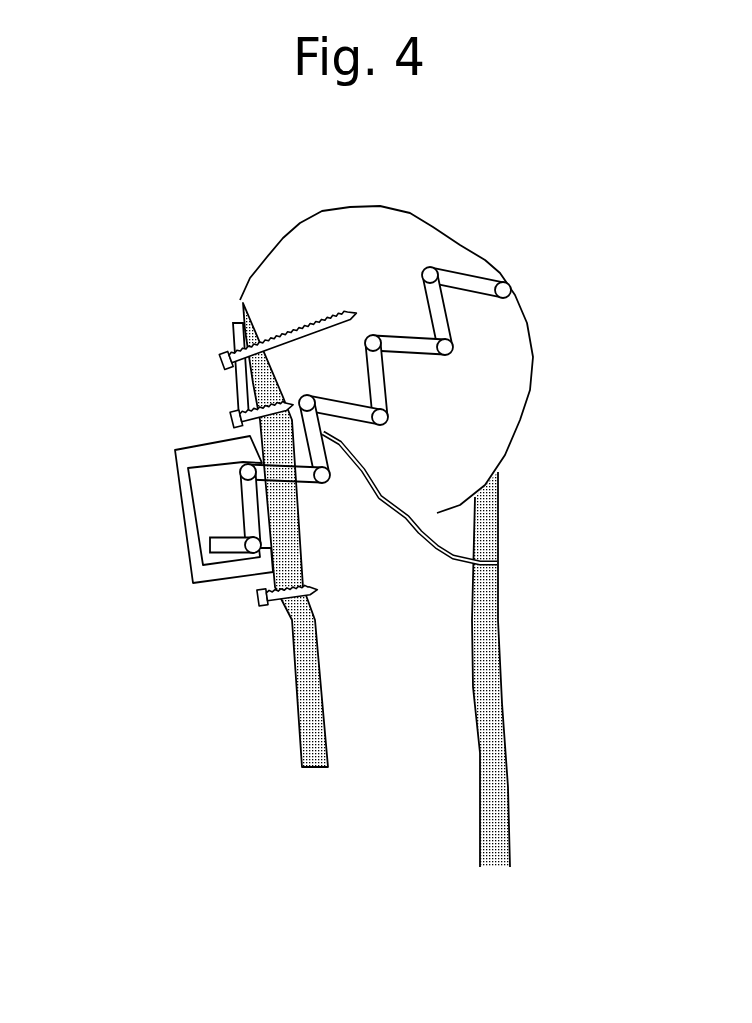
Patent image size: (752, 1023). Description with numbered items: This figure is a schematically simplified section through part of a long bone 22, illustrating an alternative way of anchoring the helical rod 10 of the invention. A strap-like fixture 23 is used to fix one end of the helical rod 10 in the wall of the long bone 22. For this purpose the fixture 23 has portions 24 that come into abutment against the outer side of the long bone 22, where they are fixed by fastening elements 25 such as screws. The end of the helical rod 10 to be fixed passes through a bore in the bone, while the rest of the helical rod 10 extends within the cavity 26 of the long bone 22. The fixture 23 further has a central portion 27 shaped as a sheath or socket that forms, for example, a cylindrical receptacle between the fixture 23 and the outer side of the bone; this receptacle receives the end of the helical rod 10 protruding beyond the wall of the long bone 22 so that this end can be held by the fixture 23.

The helical rod 10 is at (441, 318).
The long bone 22 is at (483, 602).
The strap-like fixture 23 is at (185, 488).
The portions 24 is at (247, 397).
The fastening elements 25 is at (233, 368).
The cavity 26 is at (447, 747).
The central portion 27 is at (218, 517).